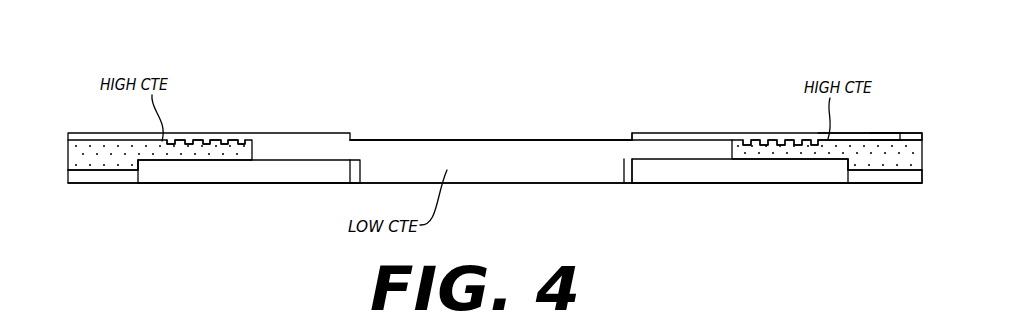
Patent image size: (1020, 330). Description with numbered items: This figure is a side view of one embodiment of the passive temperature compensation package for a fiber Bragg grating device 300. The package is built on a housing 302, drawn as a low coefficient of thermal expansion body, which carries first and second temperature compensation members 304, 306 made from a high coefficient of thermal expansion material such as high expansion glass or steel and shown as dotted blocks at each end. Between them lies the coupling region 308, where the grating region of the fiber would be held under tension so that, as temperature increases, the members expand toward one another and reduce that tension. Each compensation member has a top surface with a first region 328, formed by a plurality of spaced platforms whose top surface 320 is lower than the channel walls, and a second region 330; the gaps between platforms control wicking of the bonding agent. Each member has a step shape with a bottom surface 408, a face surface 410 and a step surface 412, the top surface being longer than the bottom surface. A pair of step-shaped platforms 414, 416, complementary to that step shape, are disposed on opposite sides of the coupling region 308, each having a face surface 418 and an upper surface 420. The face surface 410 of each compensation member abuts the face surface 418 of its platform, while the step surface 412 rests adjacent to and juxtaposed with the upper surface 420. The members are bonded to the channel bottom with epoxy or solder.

The passive temperature compensation package for a fiber Bragg grating device 300 is at (795, 62).
The housing 302 is at (583, 177).
The first temperature compensation member 304 is at (66, 148).
The second temperature compensation member 306 is at (732, 152).
The coupling region 308 is at (472, 140).
The top surface 320 is at (855, 139).
The first region 328 is at (777, 141).
The second region 330 is at (888, 139).
The bottom surface 408 is at (877, 172).
The face surface 410 is at (845, 162).
The step surface 412 is at (770, 160).
The step-shaped platform 414 is at (255, 173).
The step-shaped platform 416 is at (678, 167).
The face surface 418 is at (138, 167).
The upper surface 420 is at (204, 160).